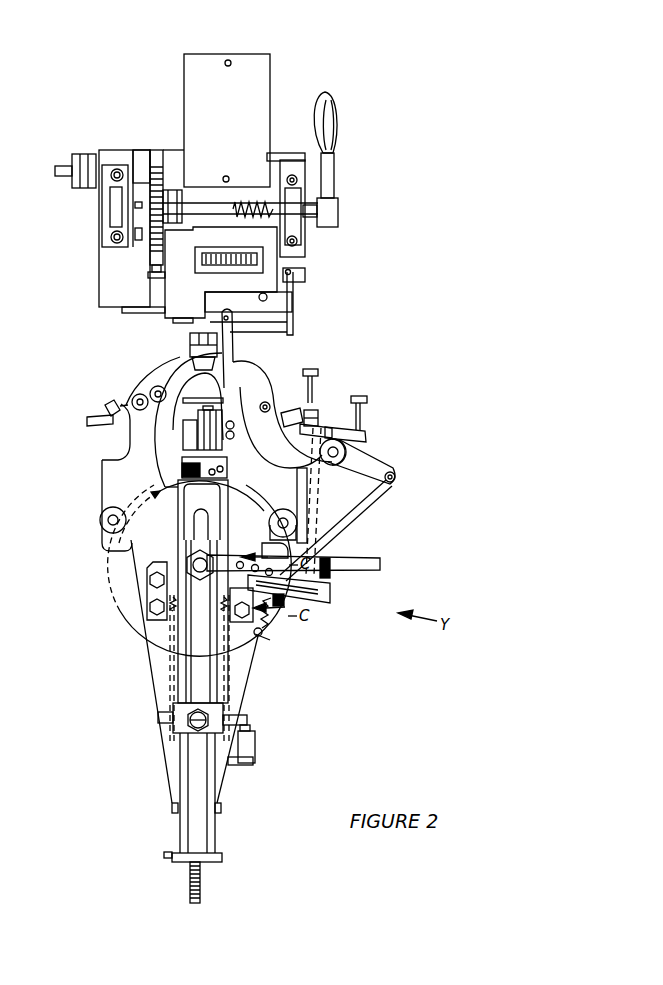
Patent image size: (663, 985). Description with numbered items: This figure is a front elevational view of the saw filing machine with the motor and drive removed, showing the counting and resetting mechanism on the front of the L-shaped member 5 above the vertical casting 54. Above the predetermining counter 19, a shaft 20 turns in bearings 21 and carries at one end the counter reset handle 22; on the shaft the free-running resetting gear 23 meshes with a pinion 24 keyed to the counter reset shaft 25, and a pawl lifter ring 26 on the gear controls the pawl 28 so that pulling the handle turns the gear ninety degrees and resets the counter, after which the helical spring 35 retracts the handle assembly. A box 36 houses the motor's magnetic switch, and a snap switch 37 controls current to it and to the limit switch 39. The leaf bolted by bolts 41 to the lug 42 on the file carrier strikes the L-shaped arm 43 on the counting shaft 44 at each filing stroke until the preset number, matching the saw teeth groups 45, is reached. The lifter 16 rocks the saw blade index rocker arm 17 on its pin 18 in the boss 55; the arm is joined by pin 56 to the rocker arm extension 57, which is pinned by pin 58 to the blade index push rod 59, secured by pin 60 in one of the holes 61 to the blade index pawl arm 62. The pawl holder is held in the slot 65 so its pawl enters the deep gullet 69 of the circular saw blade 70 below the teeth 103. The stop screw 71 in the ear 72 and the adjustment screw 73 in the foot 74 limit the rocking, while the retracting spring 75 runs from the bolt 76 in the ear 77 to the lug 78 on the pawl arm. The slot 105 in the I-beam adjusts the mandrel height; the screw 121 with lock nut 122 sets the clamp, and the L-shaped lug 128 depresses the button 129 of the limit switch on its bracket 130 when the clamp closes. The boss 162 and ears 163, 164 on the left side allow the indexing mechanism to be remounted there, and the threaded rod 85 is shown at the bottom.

The L-shaped member 5 is at (298, 300).
The lifter 16 is at (197, 395).
The saw blade index rocker arm 17 is at (252, 368).
The pin 18 is at (270, 390).
The predetermining counter 19 is at (265, 258).
The shaft 20 is at (194, 204).
The bearings 21 is at (110, 208).
The counter reset handle 22 is at (337, 168).
The resetting gear 23 is at (148, 162).
The pinion 24 is at (152, 268).
The counter reset shaft 25 is at (156, 279).
The pawl lifter ring 26 is at (150, 251).
The pawl 28 is at (155, 152).
The helical spring 35 is at (246, 201).
The box 36 is at (218, 62).
The snap switch 37 is at (82, 158).
The limit switch 39 is at (257, 751).
The bolts 41 is at (234, 443).
The lug 42 is at (228, 458).
The L-shaped arm 43 is at (294, 325).
The counting shaft 44 is at (305, 277).
The saw teeth groups 45 is at (283, 626).
The vertical casting 54 is at (103, 460).
The boss 55 is at (268, 405).
The pin 56 is at (318, 453).
The rocker arm extension 57 is at (372, 470).
The pin 58 is at (396, 478).
The blade index push rod 59 is at (378, 493).
The pin 60 is at (268, 547).
The holes 61 is at (328, 596).
The blade index pawl arm 62 is at (331, 583).
The slot 65 is at (329, 604).
The deep gullet 69 is at (261, 637).
The circular saw blade 70 is at (106, 567).
The stop screw 71 is at (318, 413).
The ear 72 is at (306, 413).
The adjustment screw 73 is at (364, 399).
The foot 74 is at (366, 441).
The retracting spring 75 is at (320, 494).
The bolt 76 is at (311, 369).
The ear 77 is at (345, 436).
The lug 78 is at (325, 568).
The threaded rod 85 is at (202, 880).
The teeth 103 is at (278, 636).
The slot 105 is at (197, 673).
The screw 121 is at (178, 722).
The lock nut 122 is at (158, 716).
The L-shaped lug 128 is at (242, 718).
The button 129 is at (252, 728).
The bracket 130 is at (250, 766).
The boss 162 is at (143, 394).
The ear 163 is at (110, 406).
The ear 164 is at (87, 420).